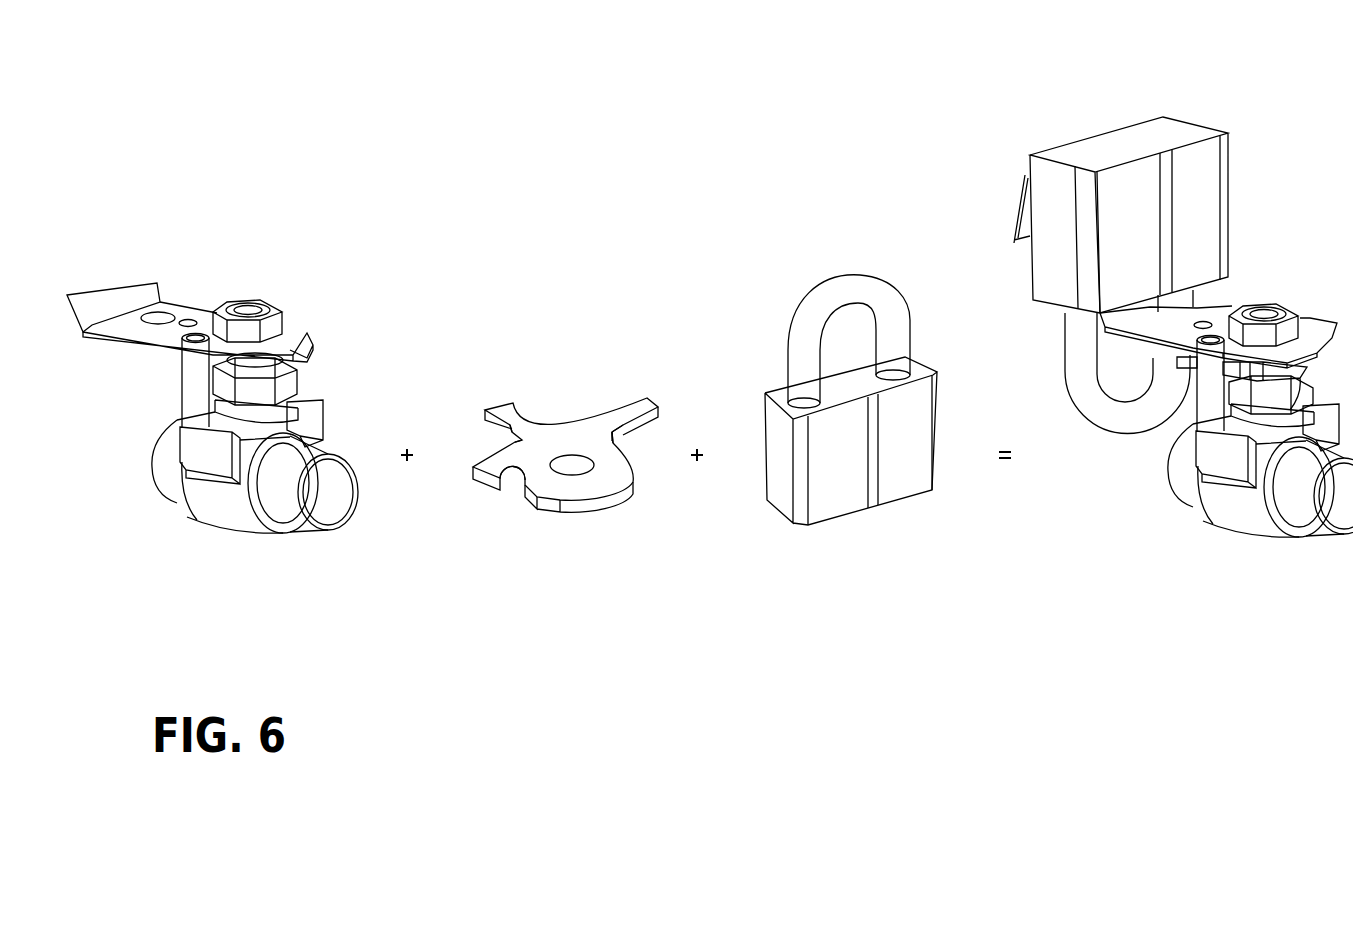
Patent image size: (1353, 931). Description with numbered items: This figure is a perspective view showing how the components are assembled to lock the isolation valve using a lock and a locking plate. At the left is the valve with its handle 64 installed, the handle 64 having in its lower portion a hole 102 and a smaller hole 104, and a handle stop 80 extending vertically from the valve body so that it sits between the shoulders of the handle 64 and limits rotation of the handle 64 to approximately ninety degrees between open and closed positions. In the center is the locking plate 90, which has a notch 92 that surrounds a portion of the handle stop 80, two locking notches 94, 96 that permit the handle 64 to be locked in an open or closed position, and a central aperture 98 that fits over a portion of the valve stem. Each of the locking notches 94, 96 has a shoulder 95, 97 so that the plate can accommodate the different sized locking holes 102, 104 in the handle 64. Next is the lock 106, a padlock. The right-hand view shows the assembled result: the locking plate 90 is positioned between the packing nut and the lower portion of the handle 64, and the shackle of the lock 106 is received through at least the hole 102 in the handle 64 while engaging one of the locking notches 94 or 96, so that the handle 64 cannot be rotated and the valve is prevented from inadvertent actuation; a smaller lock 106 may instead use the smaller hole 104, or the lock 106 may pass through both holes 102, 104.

The handle 64 is at (169, 294).
The handle stop 80 is at (187, 393).
The locking plate 90 is at (552, 437).
The notch 92 is at (515, 483).
The locking notch 94 is at (512, 442).
The shoulder 95 is at (512, 427).
The locking notch 96 is at (618, 440).
The shoulder 97 is at (625, 424).
The central aperture 98 is at (573, 473).
The hole 102 is at (158, 318).
The smaller hole 104 is at (188, 323).
The lock 106 is at (893, 465).